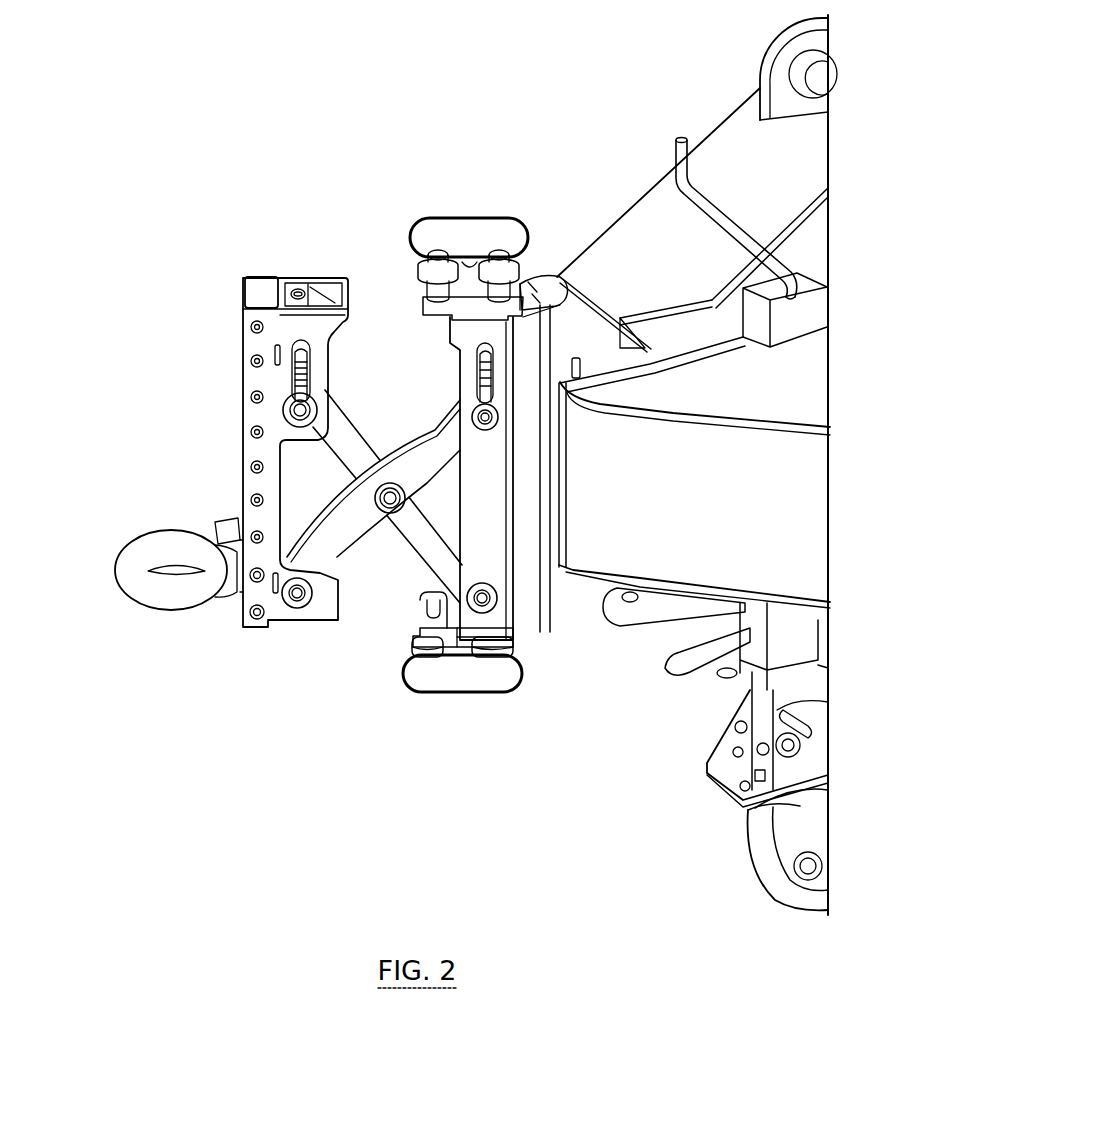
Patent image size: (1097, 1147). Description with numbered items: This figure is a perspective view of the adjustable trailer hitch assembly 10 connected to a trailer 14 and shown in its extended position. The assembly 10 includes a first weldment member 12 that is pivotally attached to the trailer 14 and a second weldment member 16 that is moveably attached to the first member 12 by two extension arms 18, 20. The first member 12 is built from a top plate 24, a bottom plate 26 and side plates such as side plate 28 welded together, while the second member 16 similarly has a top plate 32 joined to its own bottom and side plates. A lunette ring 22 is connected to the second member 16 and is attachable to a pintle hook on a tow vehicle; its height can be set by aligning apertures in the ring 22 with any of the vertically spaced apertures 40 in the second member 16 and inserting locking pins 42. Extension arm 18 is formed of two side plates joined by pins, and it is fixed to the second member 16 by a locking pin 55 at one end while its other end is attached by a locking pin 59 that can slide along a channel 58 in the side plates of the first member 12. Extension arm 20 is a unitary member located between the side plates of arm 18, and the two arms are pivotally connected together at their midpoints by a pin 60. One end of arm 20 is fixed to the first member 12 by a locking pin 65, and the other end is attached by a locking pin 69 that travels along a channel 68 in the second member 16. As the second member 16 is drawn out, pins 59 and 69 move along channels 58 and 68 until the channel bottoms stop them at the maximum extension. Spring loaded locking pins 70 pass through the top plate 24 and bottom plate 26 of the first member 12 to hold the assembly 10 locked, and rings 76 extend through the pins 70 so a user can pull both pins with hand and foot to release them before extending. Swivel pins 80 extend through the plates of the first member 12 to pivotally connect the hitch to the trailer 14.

The adjustable trailer hitch assembly 10 is at (276, 190).
The first weldment member 12 is at (487, 507).
The trailer 14 is at (757, 511).
The second weldment member 16 is at (255, 414).
The extension arm 18 is at (344, 542).
The extension arm 20 is at (352, 434).
The lunette ring 22 is at (142, 590).
The top plate 24 is at (532, 262).
The bottom plate 26 is at (420, 626).
The side plate 28 is at (535, 640).
The top plate 32 is at (258, 290).
The vertically spaced apertures 40 is at (253, 360).
The locking pins 42 is at (250, 583).
The locking pin 55 is at (296, 610).
The channel 58 is at (505, 378).
The locking pin 59 is at (500, 422).
The pin 60 is at (391, 516).
The locking pin 65 is at (478, 612).
The channel 68 is at (318, 363).
The locking pin 69 is at (300, 428).
The spring loaded locking pins 70 is at (418, 268).
The rings 76 is at (470, 206).
The swivel pins 80 is at (580, 280).